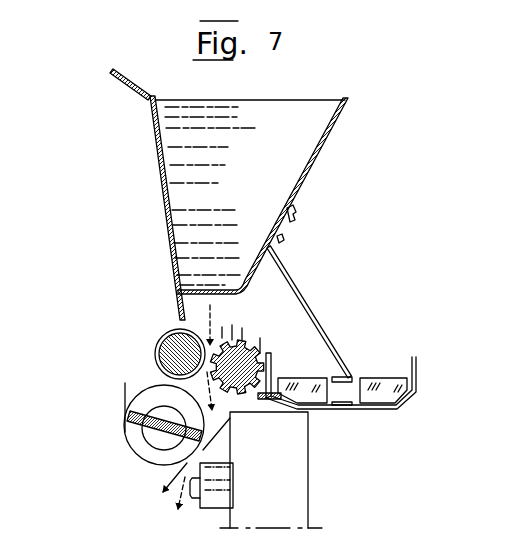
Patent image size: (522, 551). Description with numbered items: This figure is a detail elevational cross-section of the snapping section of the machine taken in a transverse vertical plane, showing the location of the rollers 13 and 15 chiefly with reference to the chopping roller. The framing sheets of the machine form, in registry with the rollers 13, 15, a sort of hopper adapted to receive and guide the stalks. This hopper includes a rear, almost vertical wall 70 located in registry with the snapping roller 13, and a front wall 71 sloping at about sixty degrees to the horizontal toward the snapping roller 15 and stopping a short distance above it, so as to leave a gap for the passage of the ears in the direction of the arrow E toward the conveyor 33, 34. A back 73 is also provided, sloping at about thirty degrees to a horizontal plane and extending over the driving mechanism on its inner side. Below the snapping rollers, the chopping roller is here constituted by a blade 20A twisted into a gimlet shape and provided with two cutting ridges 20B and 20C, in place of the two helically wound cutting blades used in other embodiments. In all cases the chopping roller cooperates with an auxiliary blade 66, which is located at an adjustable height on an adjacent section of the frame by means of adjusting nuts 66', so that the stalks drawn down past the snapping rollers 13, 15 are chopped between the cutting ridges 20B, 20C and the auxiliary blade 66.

The rear wall 70 is at (160, 193).
The hopper right wall 71 is at (305, 182).
The back 73 is at (248, 158).
The snapping roller 13 is at (162, 350).
The arrow indicating ear passage direction E is at (223, 300).
The snapping roller 15 is at (275, 362).
The conveyor 33 is at (367, 406).
The conveyor 34 is at (383, 387).
The gimlet-shaped blade 20A is at (150, 430).
The cutting ridge 20B is at (132, 407).
The cutting ridge 20C is at (207, 447).
The auxiliary blade 66 is at (207, 503).
The adjusting nuts 66' is at (166, 500).